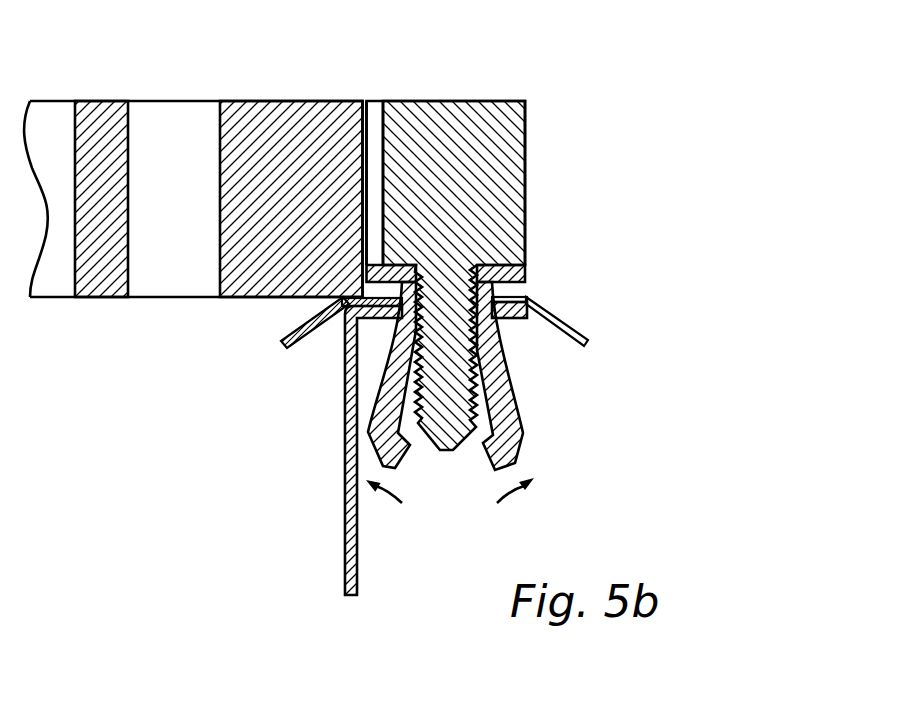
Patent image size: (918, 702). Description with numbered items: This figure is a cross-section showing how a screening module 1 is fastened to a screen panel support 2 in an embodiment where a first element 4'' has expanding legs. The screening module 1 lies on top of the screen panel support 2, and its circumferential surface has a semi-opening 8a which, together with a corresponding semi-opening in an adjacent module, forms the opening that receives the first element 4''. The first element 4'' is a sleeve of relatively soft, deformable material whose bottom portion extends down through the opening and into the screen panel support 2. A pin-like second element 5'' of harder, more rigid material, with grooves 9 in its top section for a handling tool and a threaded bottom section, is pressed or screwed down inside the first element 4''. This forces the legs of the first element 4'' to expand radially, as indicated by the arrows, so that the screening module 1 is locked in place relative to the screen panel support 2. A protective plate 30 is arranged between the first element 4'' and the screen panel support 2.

The screening module 1 is at (96, 288).
The screen panel support 2 is at (358, 560).
The first element 4'' is at (472, 332).
The second element 5'' is at (446, 236).
The semi-opening 8a is at (362, 277).
The grooves 9 is at (374, 129).
The protective plate 30 is at (556, 322).